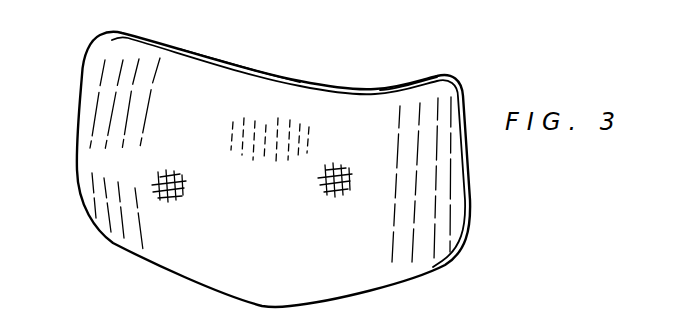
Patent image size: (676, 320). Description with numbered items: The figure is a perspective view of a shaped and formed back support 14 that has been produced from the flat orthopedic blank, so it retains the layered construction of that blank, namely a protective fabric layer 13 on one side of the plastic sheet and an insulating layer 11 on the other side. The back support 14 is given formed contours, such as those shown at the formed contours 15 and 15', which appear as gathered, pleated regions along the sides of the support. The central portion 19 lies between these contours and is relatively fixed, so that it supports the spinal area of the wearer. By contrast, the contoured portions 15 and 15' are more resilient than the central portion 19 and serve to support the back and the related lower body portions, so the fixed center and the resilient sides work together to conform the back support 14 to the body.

The insulating layer 11 is at (213, 83).
The protective fabric layer 13 is at (450, 160).
The back support 14 is at (467, 50).
The formed contour 15 is at (279, 234).
The formed contour 15' is at (281, 160).
The central portion 19 is at (310, 100).